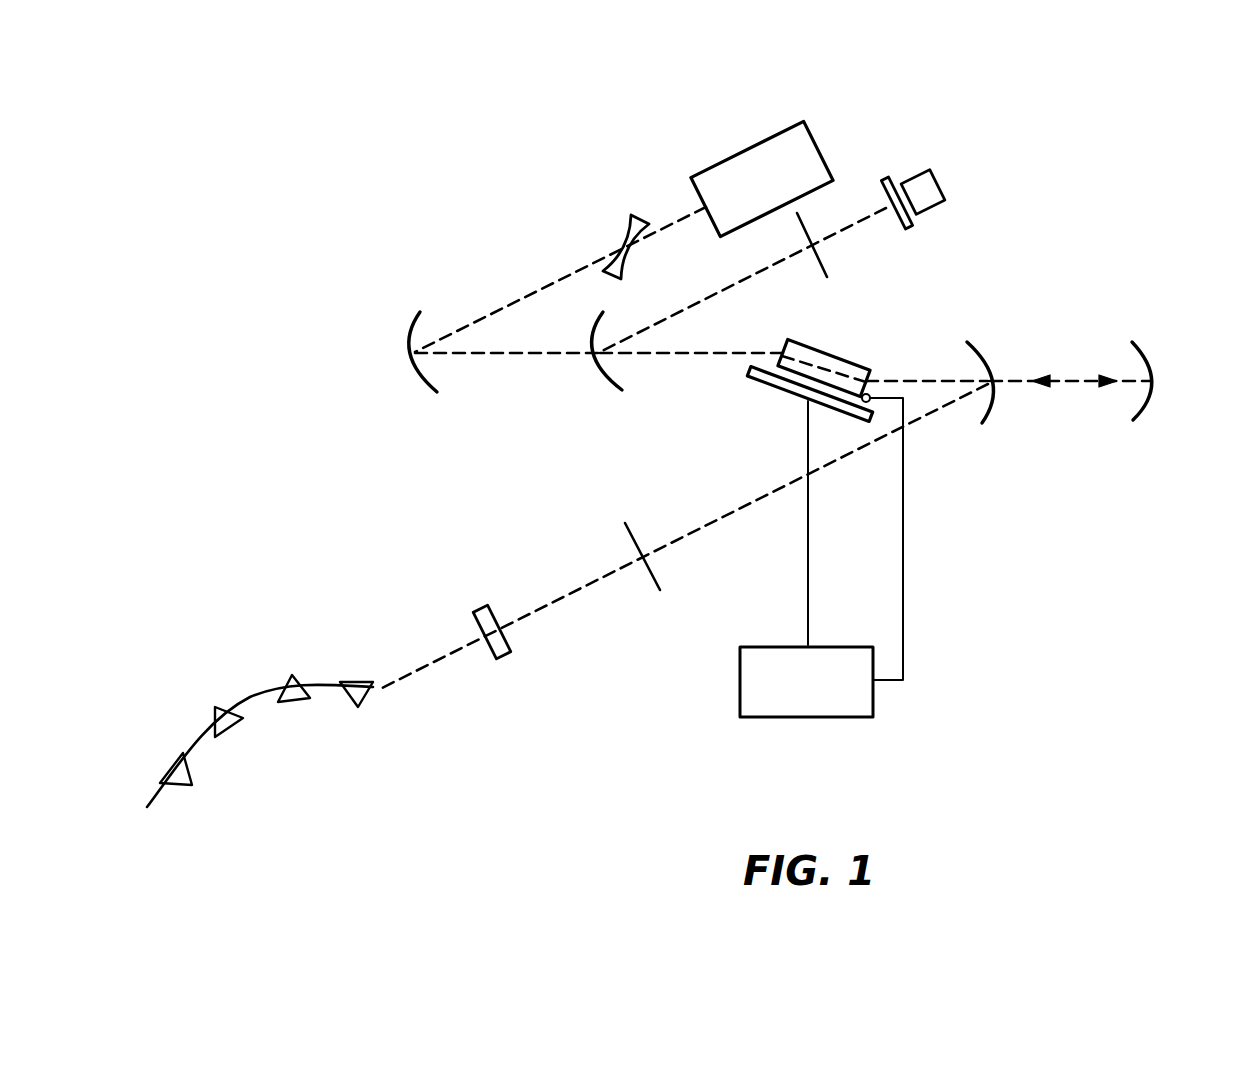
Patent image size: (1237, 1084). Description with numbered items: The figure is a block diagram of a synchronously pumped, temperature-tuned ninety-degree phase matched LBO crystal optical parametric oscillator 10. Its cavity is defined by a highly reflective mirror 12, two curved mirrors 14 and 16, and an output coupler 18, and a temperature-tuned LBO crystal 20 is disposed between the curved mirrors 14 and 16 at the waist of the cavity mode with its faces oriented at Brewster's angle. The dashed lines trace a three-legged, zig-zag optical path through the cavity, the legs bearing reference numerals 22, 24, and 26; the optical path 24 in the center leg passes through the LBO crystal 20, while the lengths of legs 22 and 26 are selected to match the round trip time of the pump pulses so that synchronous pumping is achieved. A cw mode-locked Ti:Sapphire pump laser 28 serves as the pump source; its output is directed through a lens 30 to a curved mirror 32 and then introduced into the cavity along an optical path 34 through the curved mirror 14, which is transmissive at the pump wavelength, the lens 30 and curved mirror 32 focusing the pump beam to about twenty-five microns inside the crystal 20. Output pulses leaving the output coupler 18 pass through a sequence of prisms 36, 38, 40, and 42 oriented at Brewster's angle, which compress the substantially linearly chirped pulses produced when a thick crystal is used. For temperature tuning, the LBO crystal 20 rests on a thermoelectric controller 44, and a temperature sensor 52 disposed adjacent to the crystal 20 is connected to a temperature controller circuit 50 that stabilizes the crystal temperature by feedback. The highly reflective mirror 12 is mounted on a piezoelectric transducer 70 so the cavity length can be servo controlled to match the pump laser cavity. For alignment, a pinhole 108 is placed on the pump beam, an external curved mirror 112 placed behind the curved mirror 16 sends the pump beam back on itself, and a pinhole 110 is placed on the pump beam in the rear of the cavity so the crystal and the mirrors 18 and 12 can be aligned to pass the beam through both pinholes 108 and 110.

The optical parametric oscillator 10 is at (486, 190).
The highly reflective mirror 12 is at (884, 196).
The curved mirror 14 is at (598, 386).
The curved mirror 16 is at (980, 418).
The output coupler 18 is at (512, 642).
The LBO crystal 20 is at (818, 347).
The cavity leg 22 is at (728, 297).
The cavity leg 24 is at (700, 358).
The cavity leg 26 is at (590, 580).
The pump laser 28 is at (722, 152).
The lens 30 is at (598, 236).
The curved mirror 32 is at (412, 366).
The optical path 34 is at (542, 356).
The prism 36 is at (364, 706).
The prism 38 is at (284, 682).
The prism 40 is at (236, 728).
The prism 42 is at (186, 790).
The thermoelectric controller 44 is at (764, 382).
The temperature controller circuit 50 is at (875, 712).
The temperature sensor 52 is at (870, 392).
The piezoelectric transducer 70 is at (938, 212).
The pinhole 108 is at (664, 578).
The pinhole 110 is at (828, 268).
The external curved mirror 112 is at (1148, 408).